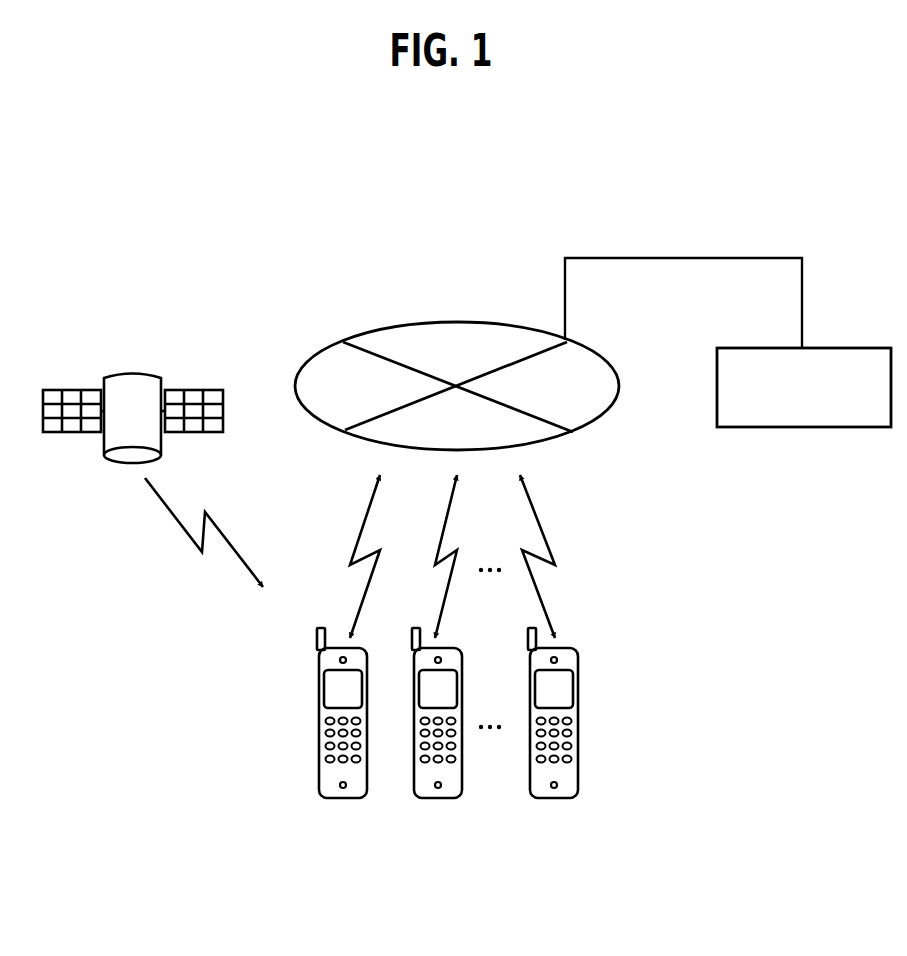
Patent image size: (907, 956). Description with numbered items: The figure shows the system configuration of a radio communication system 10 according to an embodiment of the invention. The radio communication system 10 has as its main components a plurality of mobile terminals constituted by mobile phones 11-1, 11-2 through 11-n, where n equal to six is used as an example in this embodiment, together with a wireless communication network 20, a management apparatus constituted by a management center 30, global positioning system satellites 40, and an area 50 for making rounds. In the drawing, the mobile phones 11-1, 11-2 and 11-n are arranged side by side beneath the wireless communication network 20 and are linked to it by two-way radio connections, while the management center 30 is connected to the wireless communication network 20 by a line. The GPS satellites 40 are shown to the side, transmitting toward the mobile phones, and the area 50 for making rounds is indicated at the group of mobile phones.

The radio communication system 10 is at (301, 201).
The mobile phone 11-1 is at (343, 800).
The mobile phone 11-2 is at (438, 800).
The mobile phone 11-n is at (554, 800).
The wireless communication network 20 is at (585, 425).
The management center 30 is at (805, 428).
The global positioning system (GPS) satellites 40 is at (133, 372).
The area for making rounds 50 is at (264, 756).